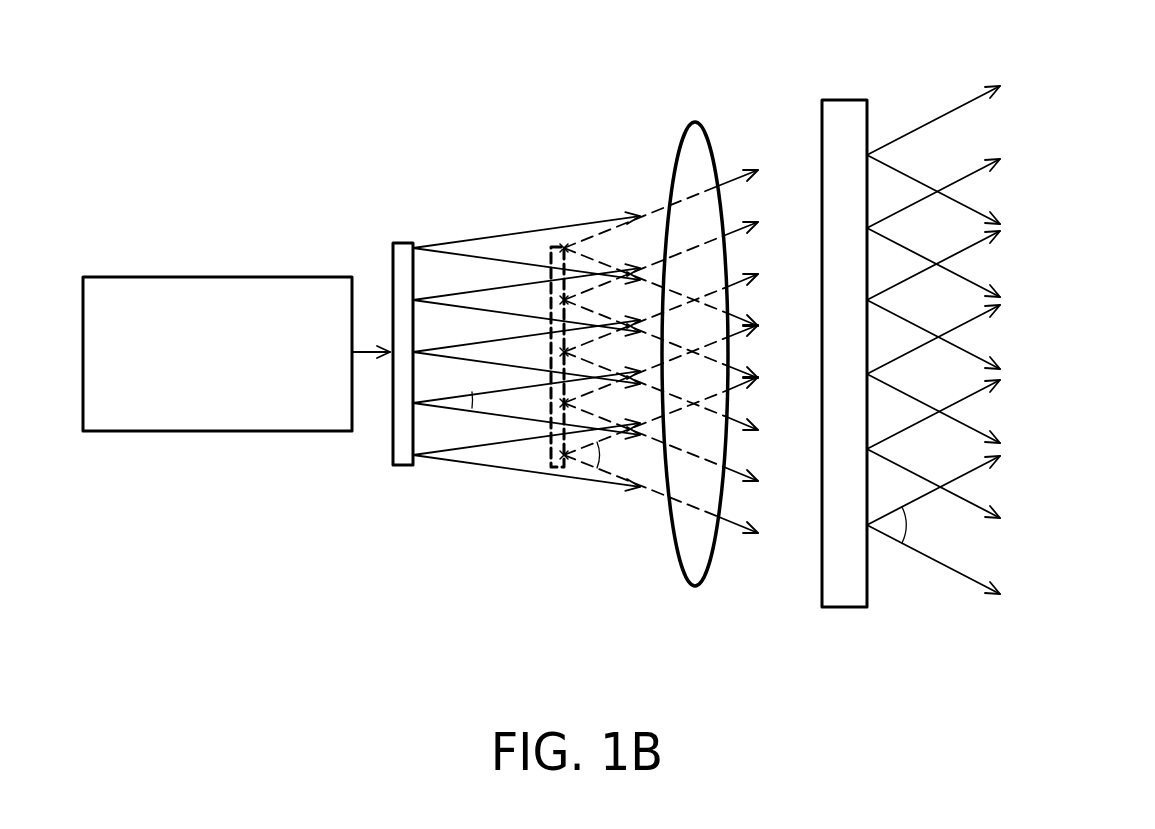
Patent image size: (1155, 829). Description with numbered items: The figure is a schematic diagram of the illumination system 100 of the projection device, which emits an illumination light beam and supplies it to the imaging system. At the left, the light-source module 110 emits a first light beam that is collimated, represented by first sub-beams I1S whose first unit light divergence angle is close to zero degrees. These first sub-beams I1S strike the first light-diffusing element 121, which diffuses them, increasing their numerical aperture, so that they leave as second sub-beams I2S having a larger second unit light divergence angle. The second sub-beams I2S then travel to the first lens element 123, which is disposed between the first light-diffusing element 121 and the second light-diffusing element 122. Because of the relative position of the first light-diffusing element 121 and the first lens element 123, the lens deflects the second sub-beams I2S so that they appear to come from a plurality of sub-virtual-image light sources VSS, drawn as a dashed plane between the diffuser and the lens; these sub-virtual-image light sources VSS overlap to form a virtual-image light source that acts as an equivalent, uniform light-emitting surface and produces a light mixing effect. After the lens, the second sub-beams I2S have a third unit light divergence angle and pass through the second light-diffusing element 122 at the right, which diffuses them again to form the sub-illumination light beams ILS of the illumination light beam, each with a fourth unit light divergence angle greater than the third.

The illumination system 100 is at (1078, 708).
The light-source module 110 is at (214, 280).
The first light-diffusing element 121 is at (403, 246).
The second light-diffusing element 122 is at (844, 104).
The first lens element 123 is at (695, 124).
The sub-virtual-image light sources VSS is at (547, 252).
The first sub-beams I1S is at (370, 352).
The second sub-beams I2S is at (490, 470).
The sub-illumination light beams ILS is at (936, 568).